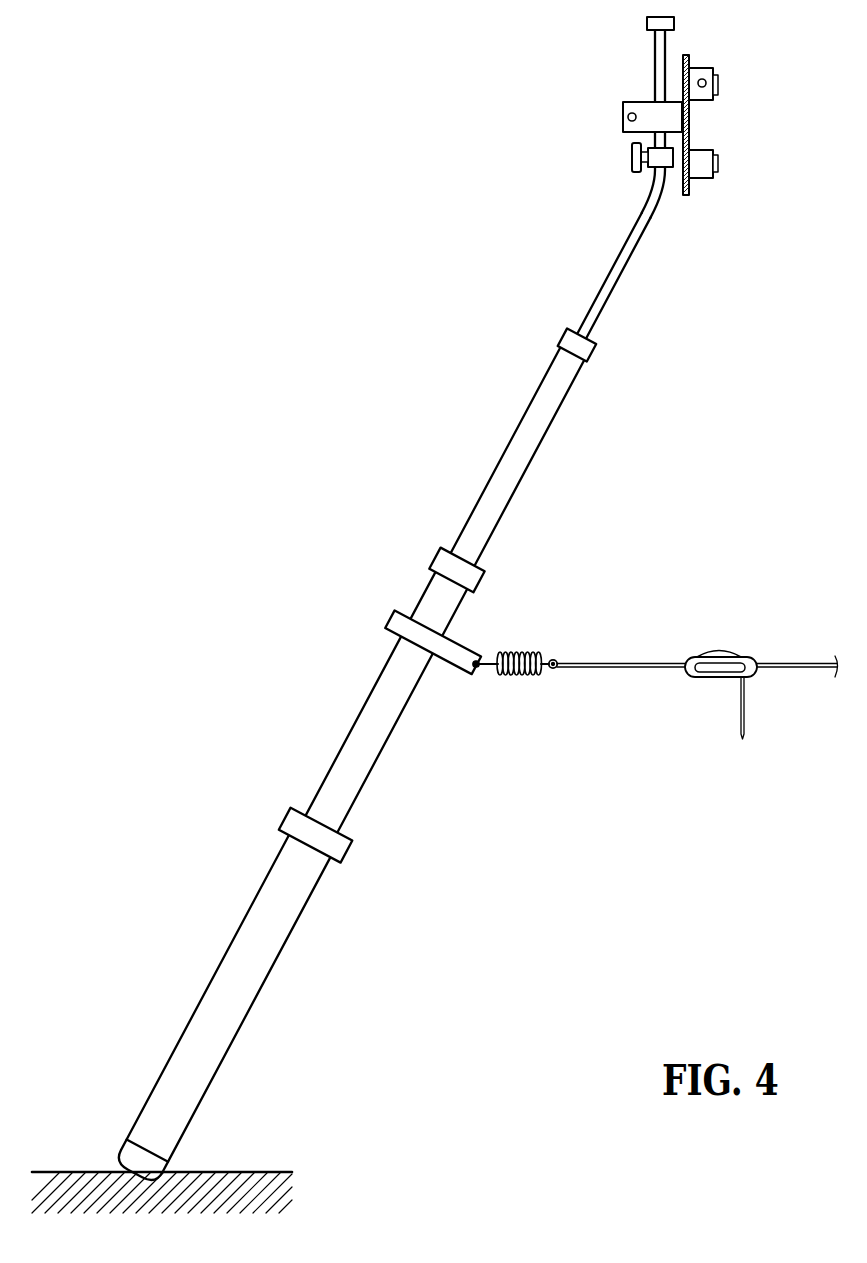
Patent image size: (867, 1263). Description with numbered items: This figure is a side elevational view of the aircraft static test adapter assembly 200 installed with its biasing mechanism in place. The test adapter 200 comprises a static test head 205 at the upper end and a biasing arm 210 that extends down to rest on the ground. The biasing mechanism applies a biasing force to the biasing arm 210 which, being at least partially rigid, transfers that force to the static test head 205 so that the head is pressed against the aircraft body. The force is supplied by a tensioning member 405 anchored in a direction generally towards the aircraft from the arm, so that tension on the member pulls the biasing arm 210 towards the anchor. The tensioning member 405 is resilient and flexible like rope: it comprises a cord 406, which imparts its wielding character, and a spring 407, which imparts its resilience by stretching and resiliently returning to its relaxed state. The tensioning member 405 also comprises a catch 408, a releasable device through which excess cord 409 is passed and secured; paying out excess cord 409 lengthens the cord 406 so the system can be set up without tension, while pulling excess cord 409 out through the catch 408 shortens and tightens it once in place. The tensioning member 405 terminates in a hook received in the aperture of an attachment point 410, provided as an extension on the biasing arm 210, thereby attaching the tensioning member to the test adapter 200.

The aircraft static test adapter assembly 200 is at (210, 138).
The static test head 205 is at (729, 46).
The biasing arm 210 is at (382, 697).
The tensioning member 405 is at (602, 664).
The cord 406 is at (660, 664).
The spring 407 is at (523, 652).
The catch 408 is at (693, 704).
The excess cord 409 is at (776, 712).
The attachment point 410 is at (457, 701).